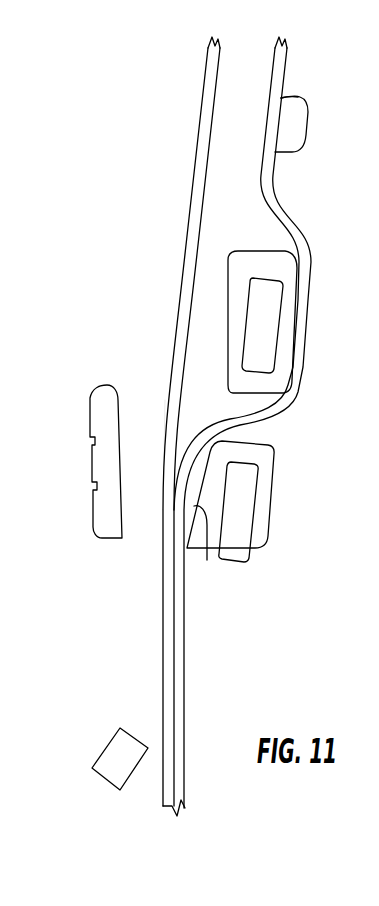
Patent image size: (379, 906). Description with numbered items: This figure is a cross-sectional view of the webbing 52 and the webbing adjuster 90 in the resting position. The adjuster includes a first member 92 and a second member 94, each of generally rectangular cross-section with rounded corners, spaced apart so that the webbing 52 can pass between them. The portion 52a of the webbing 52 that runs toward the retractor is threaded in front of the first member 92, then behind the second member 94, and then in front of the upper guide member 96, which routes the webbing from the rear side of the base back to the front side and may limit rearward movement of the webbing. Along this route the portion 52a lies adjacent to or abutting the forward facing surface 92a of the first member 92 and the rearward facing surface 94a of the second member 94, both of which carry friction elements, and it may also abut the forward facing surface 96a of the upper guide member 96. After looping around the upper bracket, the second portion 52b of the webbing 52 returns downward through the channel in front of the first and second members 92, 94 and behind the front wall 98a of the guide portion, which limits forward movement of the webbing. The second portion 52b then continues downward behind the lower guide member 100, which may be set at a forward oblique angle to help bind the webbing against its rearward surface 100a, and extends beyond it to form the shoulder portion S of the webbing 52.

The webbing 52 is at (188, 77).
The portion of the webbing 52a is at (275, 221).
The second portion of the webbing 52b is at (192, 182).
The webbing adjuster 90 is at (162, 226).
The first member 92 is at (240, 512).
The forward facing surface of the first member 92a is at (207, 560).
The second member 94 is at (247, 323).
The rearward facing surface of the second member 94a is at (297, 307).
The upper guide member 96 is at (290, 127).
The forward facing surface of the upper guide member 96a is at (280, 117).
The front wall 98a is at (107, 465).
The lower guide member 100 is at (117, 760).
The rearward surface of the lower guide member 100a is at (132, 778).
The shoulder portion of the webbing S is at (163, 783).